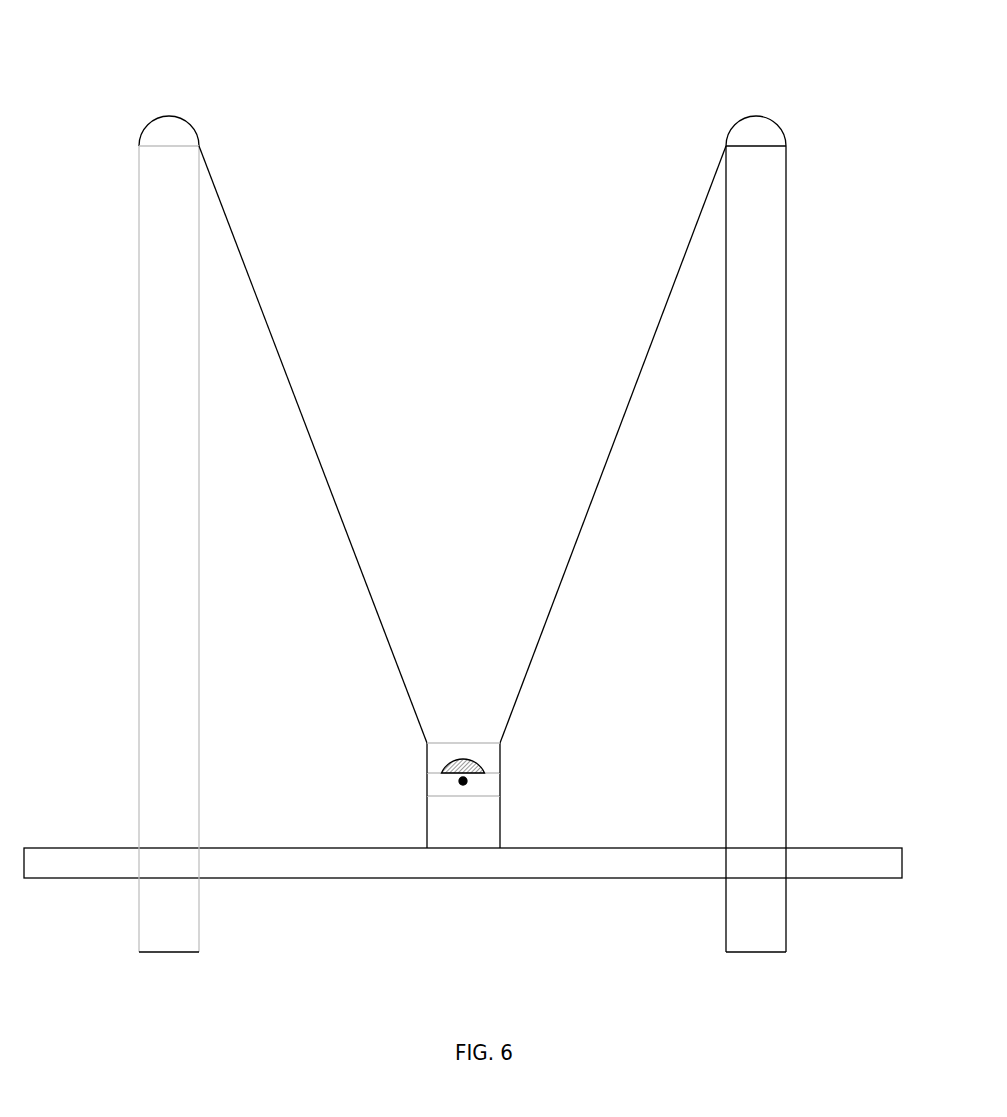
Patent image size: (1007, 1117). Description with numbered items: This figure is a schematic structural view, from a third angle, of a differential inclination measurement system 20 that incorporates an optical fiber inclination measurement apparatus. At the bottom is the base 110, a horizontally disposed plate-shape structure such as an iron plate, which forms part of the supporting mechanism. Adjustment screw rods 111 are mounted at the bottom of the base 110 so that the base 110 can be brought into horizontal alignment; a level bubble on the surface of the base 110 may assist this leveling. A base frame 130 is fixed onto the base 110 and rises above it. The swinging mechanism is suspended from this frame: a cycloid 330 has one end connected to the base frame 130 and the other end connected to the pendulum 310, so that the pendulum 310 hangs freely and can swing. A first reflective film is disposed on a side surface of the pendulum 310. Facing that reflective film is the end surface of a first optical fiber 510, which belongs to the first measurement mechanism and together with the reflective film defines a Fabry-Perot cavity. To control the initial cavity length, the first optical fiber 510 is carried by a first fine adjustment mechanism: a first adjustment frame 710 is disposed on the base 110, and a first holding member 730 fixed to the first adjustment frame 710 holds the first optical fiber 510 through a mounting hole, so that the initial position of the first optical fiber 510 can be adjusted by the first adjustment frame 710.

The differential inclination measurement system 20 is at (461, 37).
The base 110 is at (892, 863).
The adjustment screw rods 111 is at (772, 927).
The base frame 130 is at (775, 525).
The pendulum 310 is at (497, 758).
The cycloid 330 is at (560, 587).
The first optical fiber 510 is at (459, 782).
The first adjustment frame 710 is at (492, 820).
The first holding member 730 is at (487, 786).